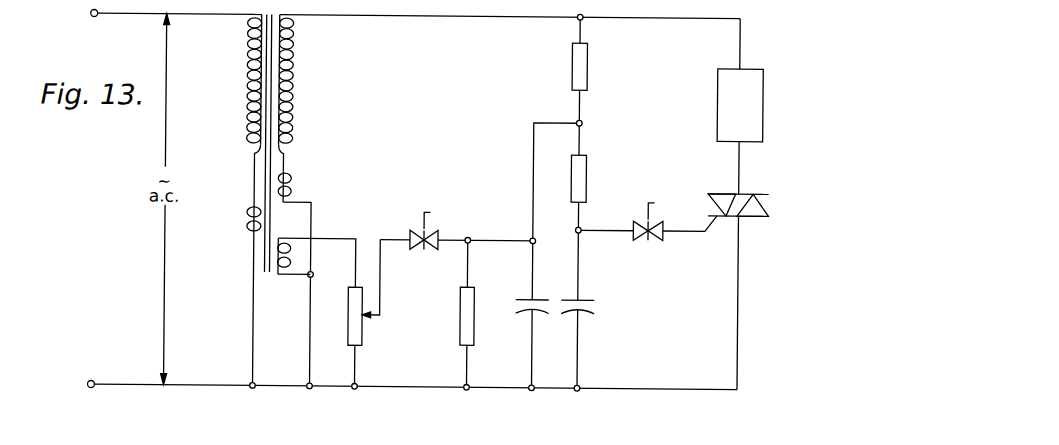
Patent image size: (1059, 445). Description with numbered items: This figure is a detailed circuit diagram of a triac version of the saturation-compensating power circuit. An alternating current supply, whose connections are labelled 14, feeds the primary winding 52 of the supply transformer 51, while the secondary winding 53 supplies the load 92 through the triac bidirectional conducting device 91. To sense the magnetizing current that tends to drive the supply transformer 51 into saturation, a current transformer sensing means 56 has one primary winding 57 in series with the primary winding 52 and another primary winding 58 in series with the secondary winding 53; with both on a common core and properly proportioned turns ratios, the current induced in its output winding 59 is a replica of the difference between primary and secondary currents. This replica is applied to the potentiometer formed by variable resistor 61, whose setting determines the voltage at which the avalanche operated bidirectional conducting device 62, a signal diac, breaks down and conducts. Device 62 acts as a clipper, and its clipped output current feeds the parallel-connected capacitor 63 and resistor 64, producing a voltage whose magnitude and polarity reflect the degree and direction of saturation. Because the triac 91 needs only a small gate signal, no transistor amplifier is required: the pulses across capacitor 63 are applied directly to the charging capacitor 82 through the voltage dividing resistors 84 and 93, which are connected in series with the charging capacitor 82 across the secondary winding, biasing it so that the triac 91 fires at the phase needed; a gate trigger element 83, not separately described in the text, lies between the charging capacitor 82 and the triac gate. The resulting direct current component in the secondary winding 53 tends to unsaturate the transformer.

The AC input terminals 14 is at (122, 14).
The supply transformer 51 is at (294, 46).
The primary winding 52 is at (246, 76).
The secondary winding 53 is at (285, 106).
The current transformer sensing means 56 is at (277, 226).
The primary winding 57 is at (246, 216).
The primary winding 58 is at (288, 181).
The output winding 59 is at (280, 274).
The variable resistor 61 is at (352, 332).
The avalanche operated conductivity controlled bidirectional conducting device 62 is at (424, 247).
The capacitor 63 is at (526, 294).
The resistor 64 is at (460, 320).
The charging capacitor 82 is at (569, 294).
The diac 83 is at (650, 236).
The voltage dividing resistor 84 is at (581, 174).
The triac bidirectional conducting device 91 is at (756, 212).
The load 92 is at (760, 100).
The voltage dividing resistor 93 is at (584, 58).